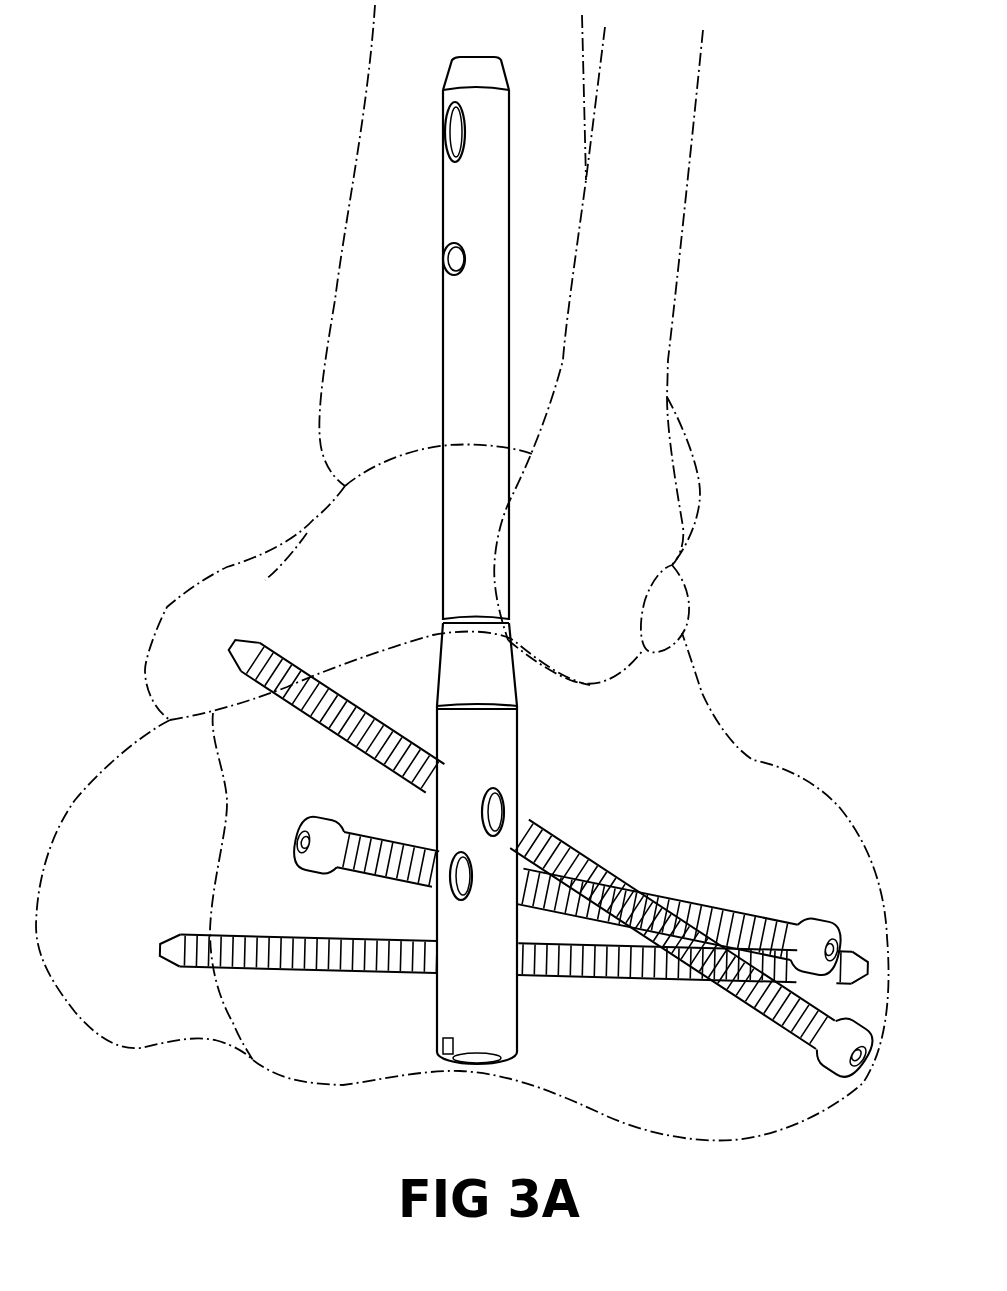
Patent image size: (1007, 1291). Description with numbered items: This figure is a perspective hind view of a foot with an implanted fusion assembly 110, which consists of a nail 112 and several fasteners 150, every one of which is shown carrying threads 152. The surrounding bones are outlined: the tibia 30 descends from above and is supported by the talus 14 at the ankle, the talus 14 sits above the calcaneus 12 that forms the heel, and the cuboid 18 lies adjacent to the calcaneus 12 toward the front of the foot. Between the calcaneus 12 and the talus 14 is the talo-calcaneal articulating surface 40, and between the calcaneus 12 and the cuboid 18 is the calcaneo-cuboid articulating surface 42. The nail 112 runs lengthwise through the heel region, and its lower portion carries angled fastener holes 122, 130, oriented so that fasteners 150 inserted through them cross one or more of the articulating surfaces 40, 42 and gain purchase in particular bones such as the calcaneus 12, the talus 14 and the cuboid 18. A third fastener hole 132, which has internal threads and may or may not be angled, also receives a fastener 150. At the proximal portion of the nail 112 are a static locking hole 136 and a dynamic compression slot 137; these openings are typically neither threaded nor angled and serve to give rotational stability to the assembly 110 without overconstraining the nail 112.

The fusion assembly 110 is at (148, 73).
The tibia 30 is at (390, 58).
The talus 14 is at (240, 614).
The articulating surface 40 is at (393, 643).
The cuboid 18 is at (127, 912).
The articulating surface 42 is at (212, 838).
The calcaneus 12 is at (650, 803).
The nail 112 is at (460, 195).
The dynamic compression slot 137 is at (453, 125).
The static locking hole 136 is at (457, 258).
The fastener hole 130 is at (483, 829).
The third fastener hole 132 is at (450, 900).
The fastener hole 122 is at (437, 948).
The fastener 150 is at (548, 852).
The threads 152 is at (702, 922).